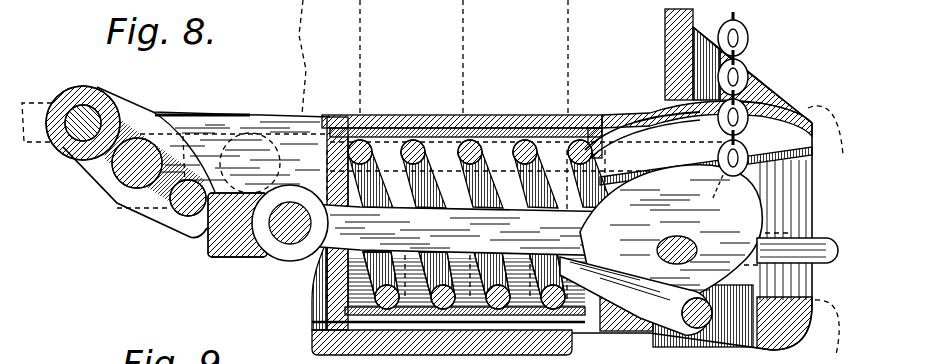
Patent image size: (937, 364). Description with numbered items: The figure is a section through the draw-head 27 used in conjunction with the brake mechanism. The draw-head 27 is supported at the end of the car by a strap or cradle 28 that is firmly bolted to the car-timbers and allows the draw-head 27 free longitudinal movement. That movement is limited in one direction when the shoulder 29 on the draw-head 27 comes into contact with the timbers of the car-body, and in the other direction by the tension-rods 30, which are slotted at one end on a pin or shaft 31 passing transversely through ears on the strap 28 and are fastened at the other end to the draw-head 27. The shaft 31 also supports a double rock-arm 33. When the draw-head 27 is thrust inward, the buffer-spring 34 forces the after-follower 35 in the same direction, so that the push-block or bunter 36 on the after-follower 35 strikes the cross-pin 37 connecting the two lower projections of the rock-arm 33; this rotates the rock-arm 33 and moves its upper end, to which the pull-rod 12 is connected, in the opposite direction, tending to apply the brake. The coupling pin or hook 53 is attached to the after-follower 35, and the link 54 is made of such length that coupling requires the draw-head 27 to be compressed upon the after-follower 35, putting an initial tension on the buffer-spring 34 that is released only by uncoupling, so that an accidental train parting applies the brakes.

The pull-rod 12 is at (40, 142).
The draw-head 27 is at (447, 117).
The strap or cradle 28 is at (240, 153).
The shoulder 29 is at (665, 58).
The tension-rods 30 is at (233, 115).
The pin or shaft 31 is at (123, 180).
The rock-arm 33 is at (115, 105).
The buffer-spring 34 is at (430, 190).
The after-follower 35 is at (310, 300).
The push-block or bunter 36 is at (238, 257).
The cross-pin 37 is at (184, 226).
The coupling pin or hook 53 is at (671, 238).
The link 54 is at (800, 238).